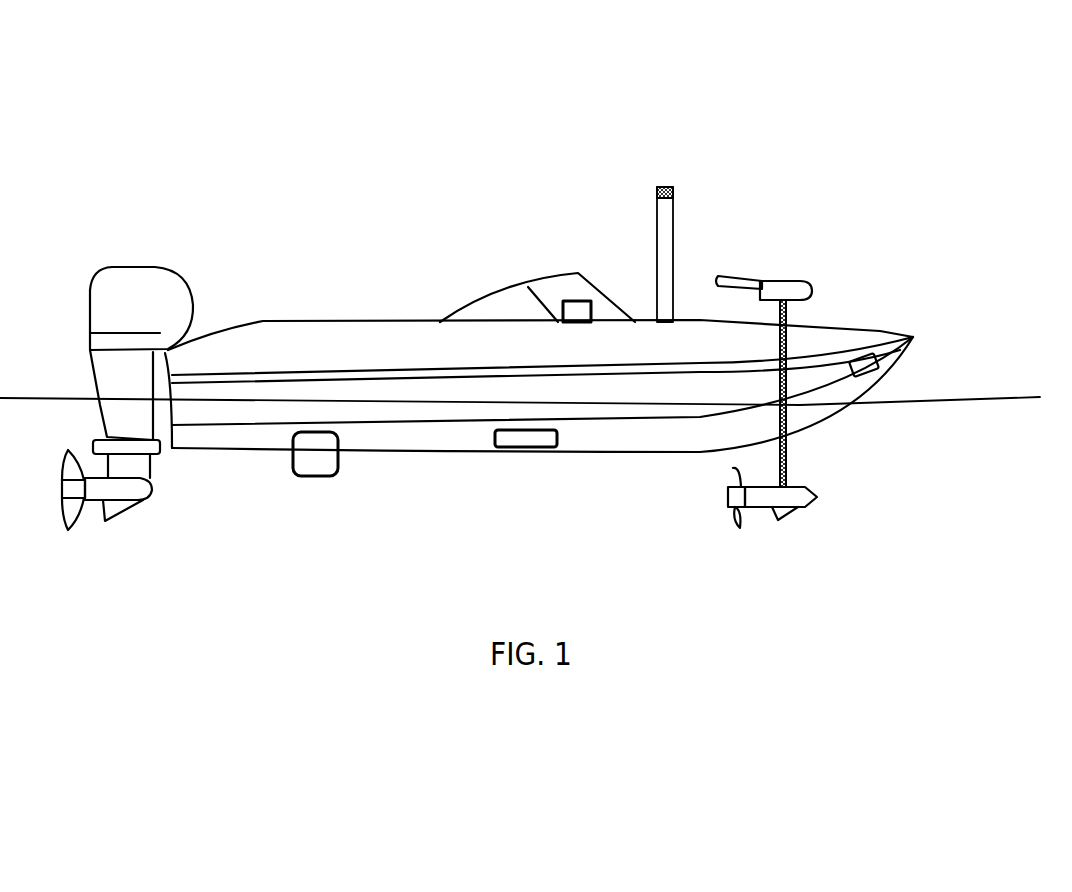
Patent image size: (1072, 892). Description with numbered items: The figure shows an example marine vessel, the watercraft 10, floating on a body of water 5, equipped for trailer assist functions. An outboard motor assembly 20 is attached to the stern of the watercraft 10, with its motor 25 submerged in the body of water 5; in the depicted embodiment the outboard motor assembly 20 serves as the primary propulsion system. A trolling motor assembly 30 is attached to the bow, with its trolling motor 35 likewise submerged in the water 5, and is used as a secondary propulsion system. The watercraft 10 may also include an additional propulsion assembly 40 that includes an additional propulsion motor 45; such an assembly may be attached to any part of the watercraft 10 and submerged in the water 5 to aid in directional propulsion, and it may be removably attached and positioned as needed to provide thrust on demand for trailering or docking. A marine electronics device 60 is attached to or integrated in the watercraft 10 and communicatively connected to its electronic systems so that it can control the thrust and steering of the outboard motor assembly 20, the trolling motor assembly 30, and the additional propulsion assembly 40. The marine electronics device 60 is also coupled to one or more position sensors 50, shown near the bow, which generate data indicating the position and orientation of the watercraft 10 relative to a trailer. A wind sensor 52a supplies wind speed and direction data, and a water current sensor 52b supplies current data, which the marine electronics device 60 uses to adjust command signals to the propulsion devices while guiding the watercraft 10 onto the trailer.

The body of water 5 is at (1001, 425).
The watercraft 10 is at (352, 180).
The outboard motor assembly 20 is at (92, 228).
The motor 25 is at (142, 496).
The trolling motor assembly 30 is at (805, 247).
The trolling motor 35 is at (811, 503).
The additional propulsion assembly 40 is at (352, 518).
The additional propulsion motor 45 is at (310, 480).
The position sensor 50 is at (873, 350).
The wind sensor 52a is at (666, 187).
The water current sensor 52b is at (528, 447).
The marine electronics device 60 is at (575, 300).